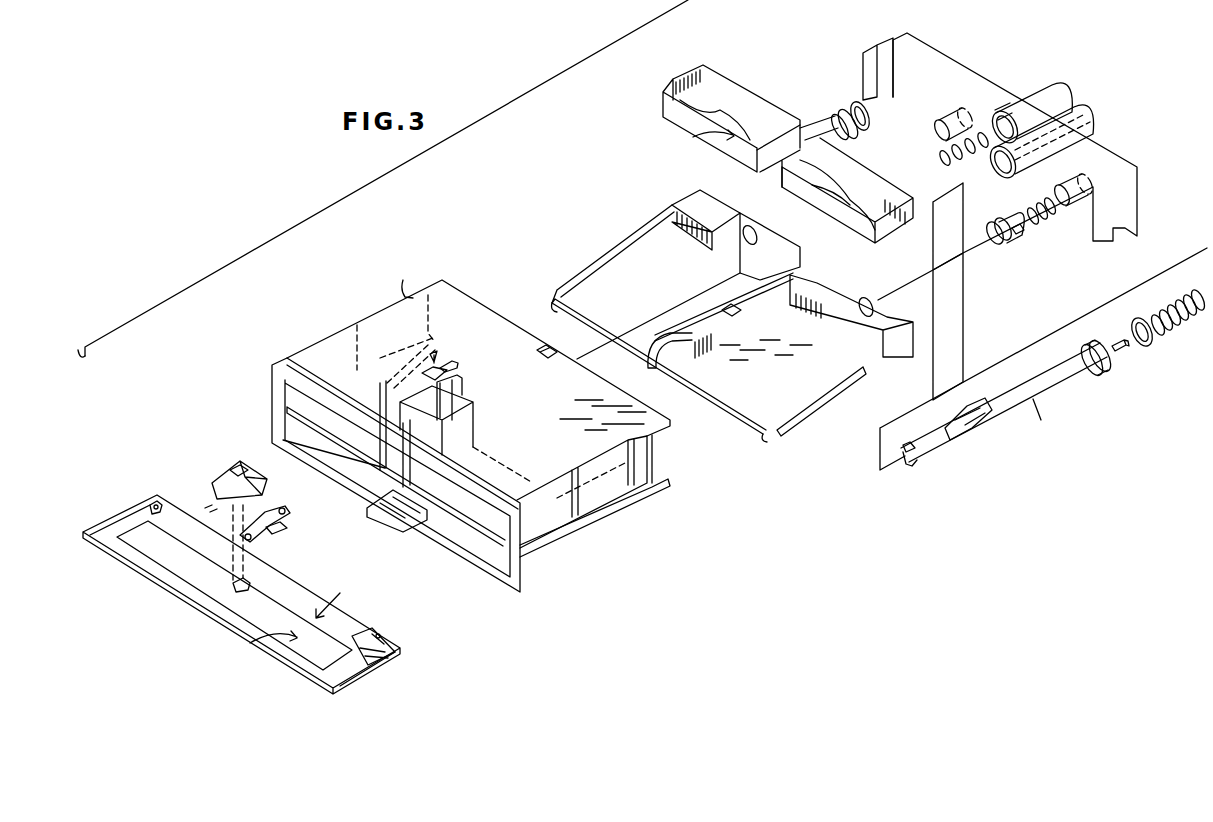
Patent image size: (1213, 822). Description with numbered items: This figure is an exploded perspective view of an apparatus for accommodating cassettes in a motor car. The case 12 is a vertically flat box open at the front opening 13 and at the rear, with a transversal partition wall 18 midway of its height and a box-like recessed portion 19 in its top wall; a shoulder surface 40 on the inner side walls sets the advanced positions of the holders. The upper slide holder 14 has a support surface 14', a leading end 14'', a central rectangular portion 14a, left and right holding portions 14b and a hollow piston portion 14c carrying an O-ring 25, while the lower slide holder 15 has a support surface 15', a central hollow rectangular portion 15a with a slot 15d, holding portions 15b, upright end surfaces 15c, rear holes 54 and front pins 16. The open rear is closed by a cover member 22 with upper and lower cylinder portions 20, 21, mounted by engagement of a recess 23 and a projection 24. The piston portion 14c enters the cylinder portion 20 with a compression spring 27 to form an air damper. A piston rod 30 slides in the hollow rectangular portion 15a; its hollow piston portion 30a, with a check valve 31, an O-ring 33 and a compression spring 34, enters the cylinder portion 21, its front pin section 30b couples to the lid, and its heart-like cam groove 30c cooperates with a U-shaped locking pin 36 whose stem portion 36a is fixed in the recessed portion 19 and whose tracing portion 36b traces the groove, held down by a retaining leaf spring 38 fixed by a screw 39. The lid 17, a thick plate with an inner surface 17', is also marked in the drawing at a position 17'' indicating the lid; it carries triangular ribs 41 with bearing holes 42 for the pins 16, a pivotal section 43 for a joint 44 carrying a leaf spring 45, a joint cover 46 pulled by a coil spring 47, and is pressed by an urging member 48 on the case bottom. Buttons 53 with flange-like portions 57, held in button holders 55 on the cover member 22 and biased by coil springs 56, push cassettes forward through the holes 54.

The case 12 is at (598, 541).
The front opening 13 is at (483, 553).
The upper slide holder 14 is at (821, 137).
The support surface 14' is at (699, 148).
The leading end 14'' is at (705, 118).
The central rectangular portion 14a is at (792, 145).
The holding portions 14b is at (870, 162).
The hollow piston portion 14c is at (820, 120).
The lower slide holder 15 is at (686, 275).
The support surface 15' is at (659, 320).
The central hollow rectangular portion 15a is at (735, 330).
The holding portions 15b is at (820, 370).
The upright end surfaces 15c is at (883, 347).
The slot 15d is at (730, 303).
The pins 16 is at (768, 440).
The lid 17 is at (259, 601).
The inner surface 17' is at (260, 652).
The front panel position 17'' is at (340, 592).
The partition wall 18 is at (463, 514).
The recessed portion 19 is at (468, 403).
The upper cylinder portion 20 is at (1050, 84).
The lower cylinder portion 21 is at (1088, 104).
The cover member 22 is at (1114, 247).
The recess 23 is at (640, 460).
The projection 24 is at (1000, 105).
The O-ring 25 is at (855, 100).
The compression spring 27 is at (955, 165).
The piston rod 30 is at (1033, 412).
The hollow piston portion 30a is at (1090, 373).
The pin section 30b is at (915, 462).
The heart-like cam groove 30c is at (980, 427).
The check valve 31 is at (1120, 355).
The O-ring 33 is at (1148, 348).
The compression spring 34 is at (1185, 318).
The locking pin 36 is at (430, 377).
The stem portion 36a is at (462, 381).
The tracing portion 36b is at (466, 388).
The retaining leaf spring 38 is at (456, 362).
The screw 39 is at (437, 352).
The shoulder surface 40 is at (360, 342).
The triangular ribs 41 is at (357, 657).
The bearing holes 42 is at (376, 632).
The pivotal section 43 is at (233, 592).
The joint 44 is at (275, 508).
The leaf spring 45 is at (276, 531).
The joint cover 46 is at (225, 470).
The coil spring 47 is at (215, 512).
The urging member 48 is at (390, 528).
The buttons 53 is at (1018, 233).
The holes 54 is at (870, 300).
The button holder 55 is at (1075, 193).
The coil spring 56 is at (1050, 215).
The flange-like portion 57 is at (1000, 246).